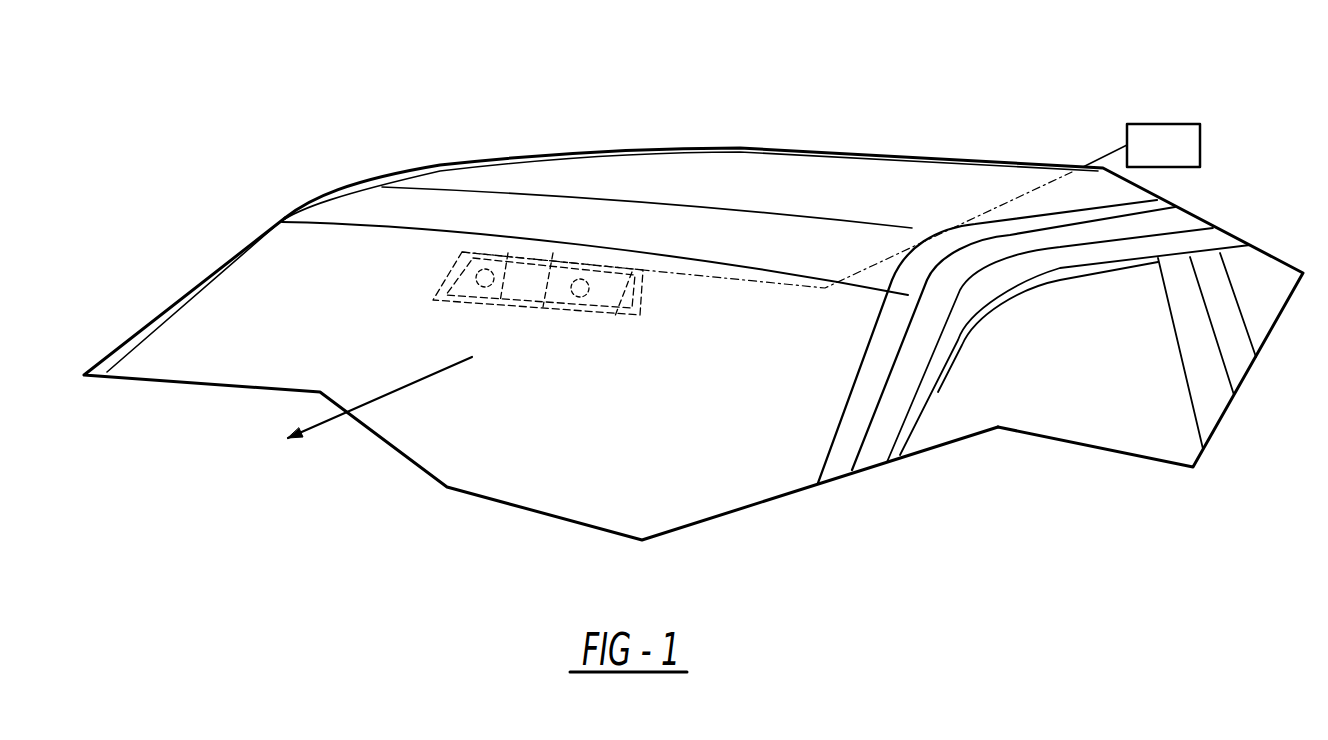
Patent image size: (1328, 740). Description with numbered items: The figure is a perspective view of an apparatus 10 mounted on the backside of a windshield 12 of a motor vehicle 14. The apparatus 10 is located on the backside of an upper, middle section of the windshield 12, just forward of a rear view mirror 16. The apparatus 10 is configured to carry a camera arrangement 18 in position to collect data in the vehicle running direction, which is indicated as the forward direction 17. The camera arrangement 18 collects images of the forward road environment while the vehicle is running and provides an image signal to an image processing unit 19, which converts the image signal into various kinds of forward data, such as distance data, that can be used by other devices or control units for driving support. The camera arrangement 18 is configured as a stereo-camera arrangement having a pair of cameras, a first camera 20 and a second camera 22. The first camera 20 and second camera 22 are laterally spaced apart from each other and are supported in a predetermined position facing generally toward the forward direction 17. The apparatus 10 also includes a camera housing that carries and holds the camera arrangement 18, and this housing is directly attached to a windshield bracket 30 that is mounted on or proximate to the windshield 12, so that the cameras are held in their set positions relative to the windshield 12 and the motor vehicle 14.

The apparatus 10 is at (526, 244).
The windshield 12 is at (623, 475).
The motor vehicle 14 is at (875, 400).
The rear view mirror 16 is at (605, 302).
The forward direction 17 is at (323, 427).
The camera arrangement 18 is at (526, 331).
The image processing unit 19 is at (1164, 124).
The first camera 20 is at (577, 298).
The second camera 22 is at (482, 290).
The windshield bracket 30 is at (530, 282).